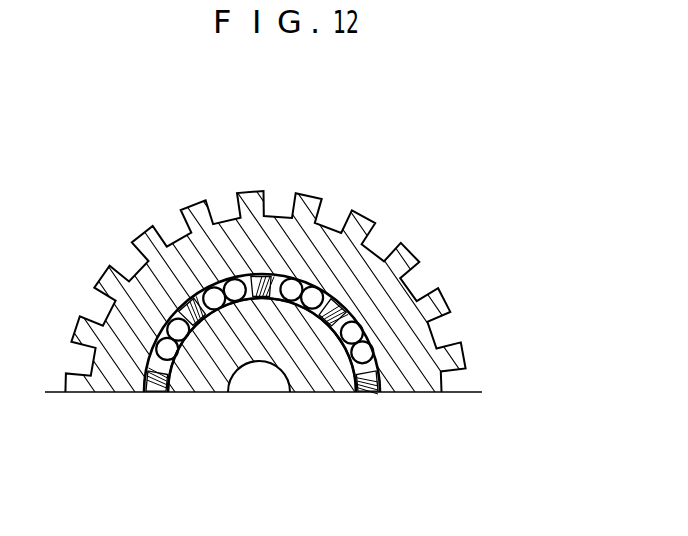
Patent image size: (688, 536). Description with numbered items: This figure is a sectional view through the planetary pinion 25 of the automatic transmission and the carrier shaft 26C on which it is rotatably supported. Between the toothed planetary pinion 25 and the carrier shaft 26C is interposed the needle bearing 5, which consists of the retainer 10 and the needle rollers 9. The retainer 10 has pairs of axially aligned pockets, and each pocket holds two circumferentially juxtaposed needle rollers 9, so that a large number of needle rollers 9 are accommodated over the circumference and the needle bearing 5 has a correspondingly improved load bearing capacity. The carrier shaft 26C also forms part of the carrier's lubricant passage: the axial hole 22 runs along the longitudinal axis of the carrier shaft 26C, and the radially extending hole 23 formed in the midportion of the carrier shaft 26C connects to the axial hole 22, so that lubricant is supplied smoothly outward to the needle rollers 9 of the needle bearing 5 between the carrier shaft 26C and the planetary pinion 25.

The needle bearing 5 is at (262, 293).
The needle rollers 9 is at (230, 286).
The retainer 10 is at (196, 300).
The axial hole 22 is at (268, 382).
The radially extending hole 23 is at (230, 352).
The planetary pinion 25 is at (362, 226).
The carrier shaft 26C is at (337, 380).